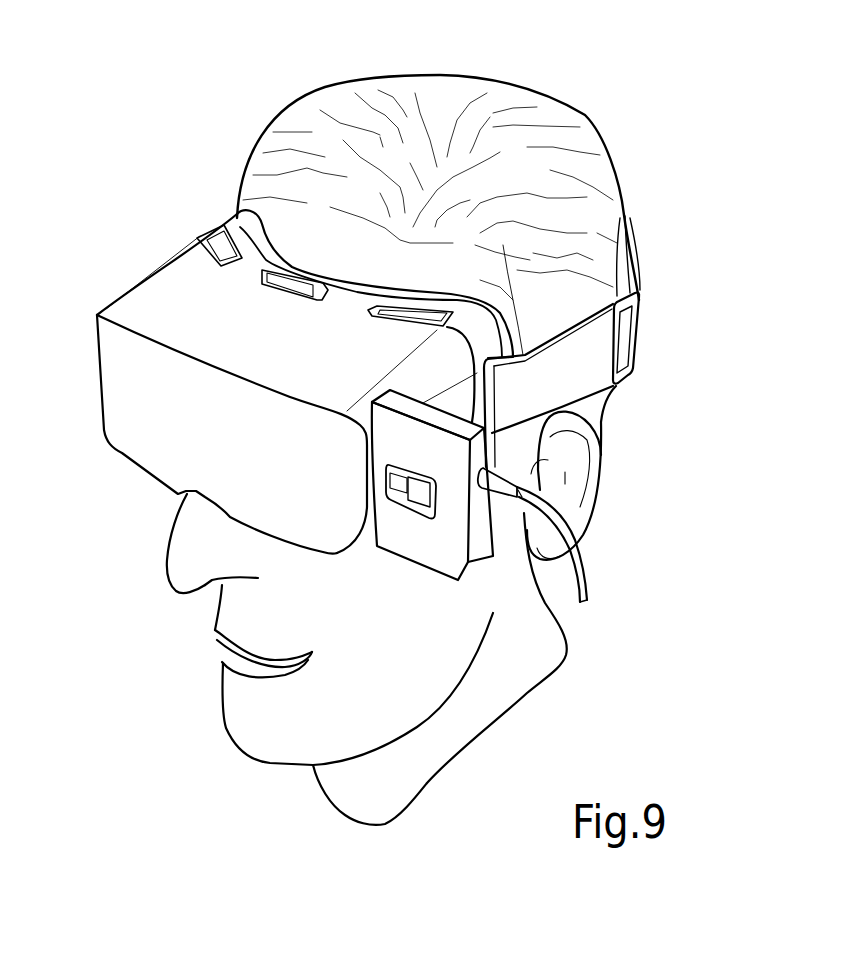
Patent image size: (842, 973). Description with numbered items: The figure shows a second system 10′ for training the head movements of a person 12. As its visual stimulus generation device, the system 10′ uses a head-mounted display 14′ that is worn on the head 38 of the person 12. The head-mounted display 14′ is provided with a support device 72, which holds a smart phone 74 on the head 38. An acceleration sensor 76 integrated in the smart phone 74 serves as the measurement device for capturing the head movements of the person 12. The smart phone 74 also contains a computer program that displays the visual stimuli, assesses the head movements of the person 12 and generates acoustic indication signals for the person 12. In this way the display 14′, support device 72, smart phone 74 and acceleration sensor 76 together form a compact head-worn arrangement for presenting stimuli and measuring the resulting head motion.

The second system 10′ is at (127, 173).
The person 12 is at (405, 422).
The head-mounted display 14′ is at (150, 303).
The head 38 is at (487, 108).
The support device 72 is at (595, 348).
The smart phone 74 is at (440, 550).
The acceleration sensor 76 is at (420, 493).